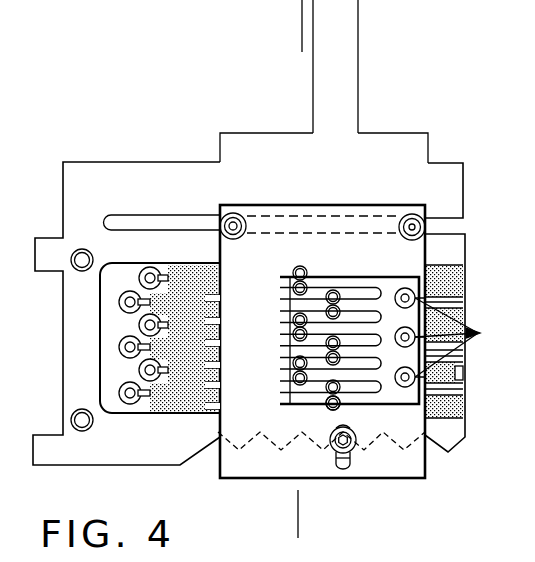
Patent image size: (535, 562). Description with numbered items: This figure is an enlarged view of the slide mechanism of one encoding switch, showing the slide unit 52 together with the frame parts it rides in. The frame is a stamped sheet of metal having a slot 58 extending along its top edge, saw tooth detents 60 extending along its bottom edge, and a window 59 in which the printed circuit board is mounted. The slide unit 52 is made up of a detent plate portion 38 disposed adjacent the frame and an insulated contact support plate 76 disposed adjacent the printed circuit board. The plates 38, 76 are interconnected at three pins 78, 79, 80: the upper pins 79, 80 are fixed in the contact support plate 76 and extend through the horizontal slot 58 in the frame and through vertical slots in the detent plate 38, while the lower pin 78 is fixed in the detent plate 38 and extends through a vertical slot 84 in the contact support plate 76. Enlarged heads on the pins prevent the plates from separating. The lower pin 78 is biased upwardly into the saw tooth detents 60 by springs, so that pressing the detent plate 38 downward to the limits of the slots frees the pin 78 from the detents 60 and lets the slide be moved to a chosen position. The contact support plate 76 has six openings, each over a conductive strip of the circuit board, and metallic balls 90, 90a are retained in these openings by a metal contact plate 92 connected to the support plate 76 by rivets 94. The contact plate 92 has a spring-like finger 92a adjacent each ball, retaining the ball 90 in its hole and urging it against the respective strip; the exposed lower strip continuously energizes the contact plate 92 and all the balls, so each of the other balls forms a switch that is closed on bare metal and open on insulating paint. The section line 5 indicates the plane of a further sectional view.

The section line 5- 5 is at (292, 23).
The detent plate portion 38 is at (417, 146).
The slide unit 52 is at (384, 110).
The slot 58 is at (146, 216).
The window 59 is at (105, 329).
The saw tooth detents 60 is at (430, 439).
The contact support plate 76 is at (232, 418).
The pin 78 is at (361, 447).
The pin 79 is at (229, 215).
The pin 80 is at (418, 216).
The vertical slot 84 is at (344, 468).
The metallic balls 90 is at (296, 268).
The heater bead 90a is at (336, 409).
The metal contact plate 92 is at (391, 290).
The spring-like finger 92a is at (290, 281).
The rivets 94 is at (462, 337).